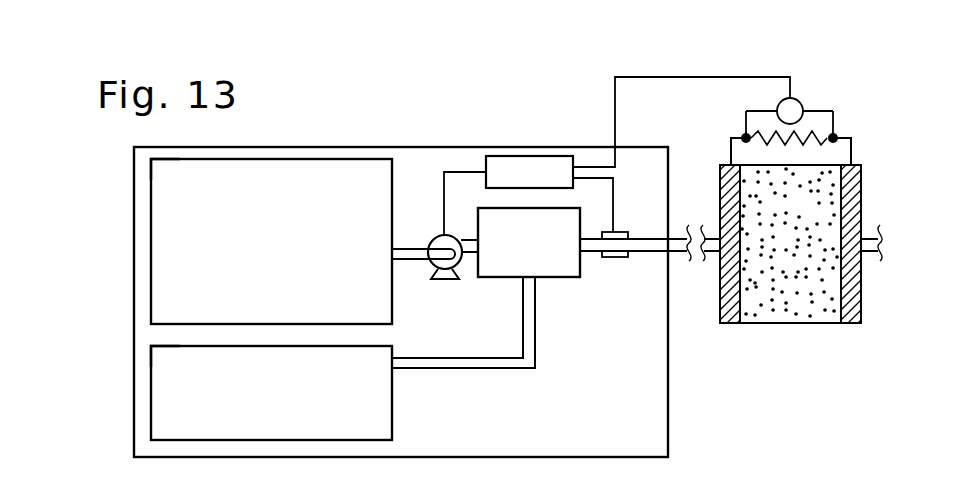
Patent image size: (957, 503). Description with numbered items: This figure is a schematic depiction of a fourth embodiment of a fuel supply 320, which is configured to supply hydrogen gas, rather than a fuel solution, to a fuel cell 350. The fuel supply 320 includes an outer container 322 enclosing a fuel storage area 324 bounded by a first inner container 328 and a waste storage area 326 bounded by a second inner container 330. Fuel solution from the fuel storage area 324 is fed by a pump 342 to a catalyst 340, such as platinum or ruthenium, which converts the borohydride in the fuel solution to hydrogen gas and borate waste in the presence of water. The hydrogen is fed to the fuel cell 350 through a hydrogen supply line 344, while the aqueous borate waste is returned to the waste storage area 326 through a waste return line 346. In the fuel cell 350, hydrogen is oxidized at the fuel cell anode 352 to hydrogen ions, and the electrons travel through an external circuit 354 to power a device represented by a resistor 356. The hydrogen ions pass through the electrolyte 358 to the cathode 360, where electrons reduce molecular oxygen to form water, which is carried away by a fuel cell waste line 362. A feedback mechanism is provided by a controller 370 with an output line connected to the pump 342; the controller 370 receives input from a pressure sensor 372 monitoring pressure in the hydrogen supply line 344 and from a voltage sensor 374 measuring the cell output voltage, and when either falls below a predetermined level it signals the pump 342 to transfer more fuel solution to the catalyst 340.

The fuel supply 320 is at (108, 219).
The outer container 322 is at (422, 147).
The fuel storage area 324 is at (252, 250).
The waste storage area 326 is at (252, 400).
The first inner container 328 is at (172, 162).
The second inner container 330 is at (172, 349).
The catalyst 340 is at (509, 256).
The pump 342 is at (445, 281).
The hydrogen supply line 344 is at (590, 253).
The waste return line 346 is at (445, 369).
The fuel cell 350 is at (867, 142).
The fuel cell anode 352 is at (722, 326).
The external circuit 354 is at (848, 137).
The resistor 356 is at (770, 135).
The electrolyte 358 is at (797, 322).
The cathode 360 is at (846, 326).
The fuel cell waste line 362 is at (877, 256).
The controller 370 is at (509, 185).
The pressure sensor 372 is at (614, 232).
The voltage sensor 374 is at (792, 97).